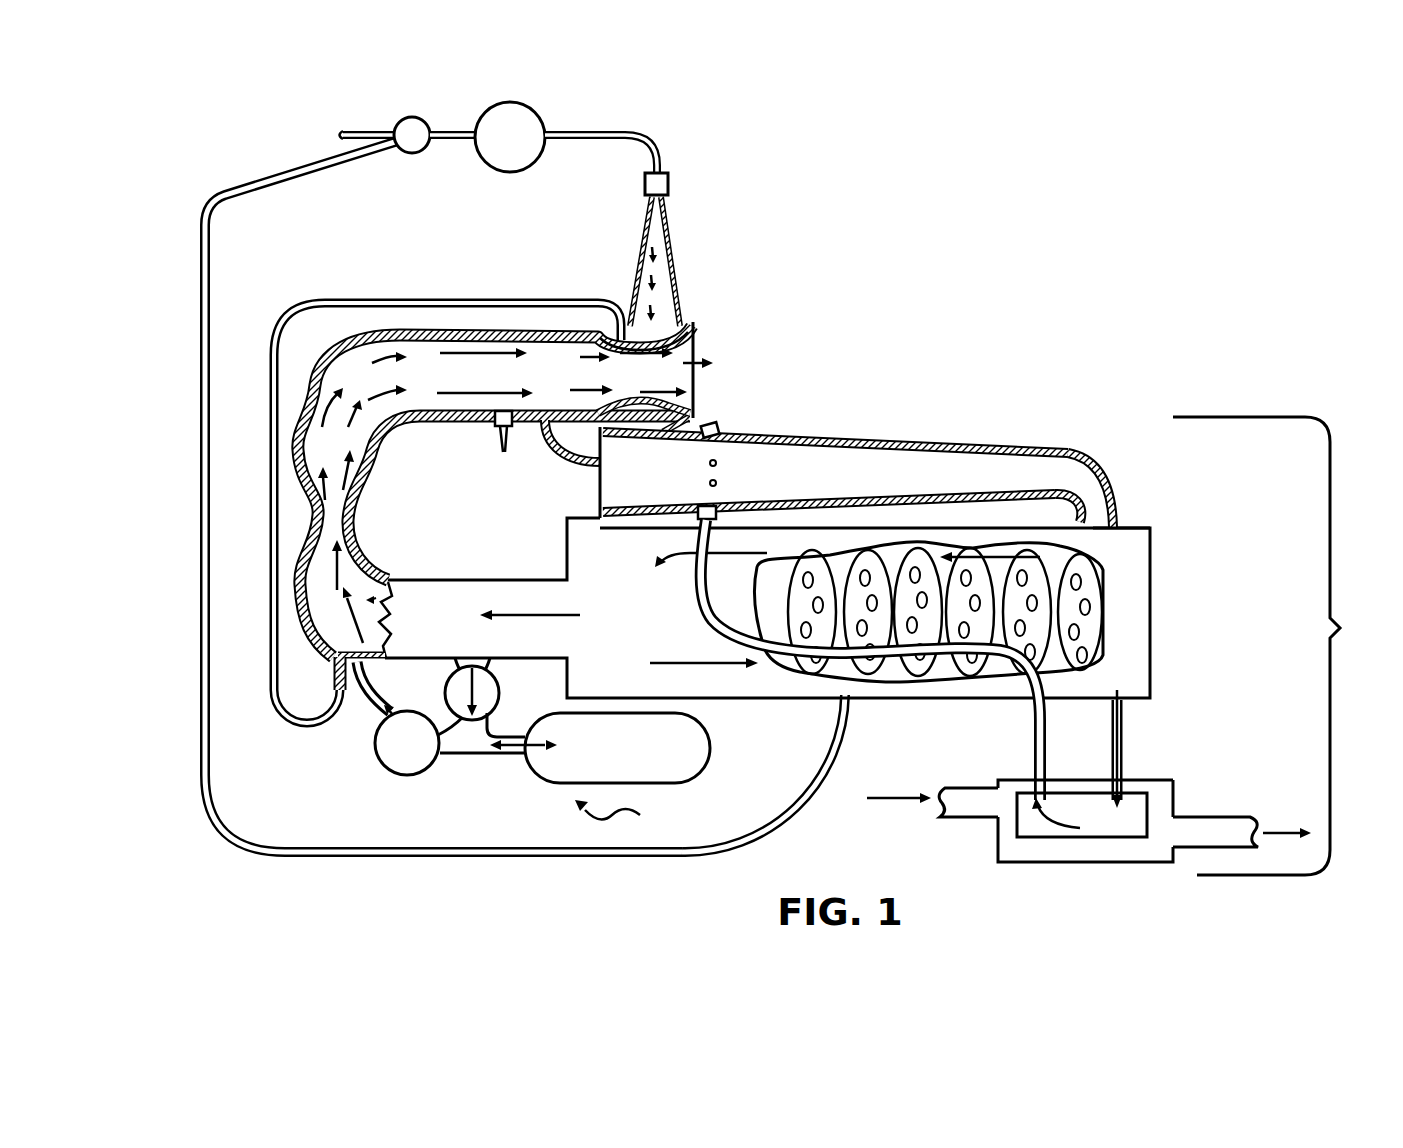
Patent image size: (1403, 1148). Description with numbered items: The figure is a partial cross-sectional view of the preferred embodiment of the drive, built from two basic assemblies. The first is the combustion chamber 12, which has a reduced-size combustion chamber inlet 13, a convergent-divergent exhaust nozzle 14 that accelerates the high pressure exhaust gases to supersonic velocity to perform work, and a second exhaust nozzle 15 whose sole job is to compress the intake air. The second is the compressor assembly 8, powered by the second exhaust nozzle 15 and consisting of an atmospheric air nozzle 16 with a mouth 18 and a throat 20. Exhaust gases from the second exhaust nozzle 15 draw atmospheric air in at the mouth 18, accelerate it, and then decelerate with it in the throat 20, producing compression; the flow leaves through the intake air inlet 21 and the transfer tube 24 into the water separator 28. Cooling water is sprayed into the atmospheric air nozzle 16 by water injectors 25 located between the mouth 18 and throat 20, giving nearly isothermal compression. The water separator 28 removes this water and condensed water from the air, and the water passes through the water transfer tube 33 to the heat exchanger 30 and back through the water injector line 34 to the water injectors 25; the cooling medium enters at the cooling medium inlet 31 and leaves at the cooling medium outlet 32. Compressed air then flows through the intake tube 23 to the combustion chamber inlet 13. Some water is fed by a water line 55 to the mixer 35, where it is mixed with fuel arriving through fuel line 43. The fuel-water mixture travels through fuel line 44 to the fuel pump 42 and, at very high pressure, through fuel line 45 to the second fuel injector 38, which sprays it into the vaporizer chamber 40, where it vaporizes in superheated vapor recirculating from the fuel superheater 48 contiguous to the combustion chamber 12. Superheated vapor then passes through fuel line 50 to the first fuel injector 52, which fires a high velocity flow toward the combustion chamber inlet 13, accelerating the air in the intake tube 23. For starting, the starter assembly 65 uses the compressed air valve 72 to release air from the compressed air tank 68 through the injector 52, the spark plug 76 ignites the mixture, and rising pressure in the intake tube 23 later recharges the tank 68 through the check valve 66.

The compressor assembly 8 is at (1270, 646).
The combustion chamber 12 is at (427, 393).
The combustion chamber inlet 13 is at (354, 517).
The exhaust nozzle 14 is at (694, 346).
The second exhaust nozzle 15 is at (597, 473).
The atmospheric air nozzle 16 is at (850, 446).
The mouth 18 is at (600, 500).
The throat 20 is at (1114, 497).
The intake air inlet 21 is at (1113, 510).
The intake tube 23 is at (470, 580).
The transfer tube 24 is at (1122, 527).
The water injectors 25 is at (722, 430).
The water separator 28 is at (1150, 662).
The heat exchanger 30 is at (1155, 780).
The cooling medium inlet 31 is at (965, 810).
The cooling medium outlet 32 is at (1210, 822).
The water transfer tube 33 is at (1120, 735).
The water injector line 34 is at (1033, 760).
The mixer 35 is at (396, 123).
The second fuel injector 38 is at (664, 183).
The vaporizer chamber 40 is at (636, 327).
The fuel pump 42 is at (478, 160).
The fuel line 43 is at (343, 134).
The fuel line 44 is at (446, 132).
The fuel line 45 is at (597, 133).
The fuel superheater 48 is at (694, 410).
The fuel line 50 is at (398, 301).
The first fuel injector 52 is at (350, 702).
The water line 55 is at (838, 757).
The starter assembly 65 is at (632, 821).
The check valve 66 is at (497, 708).
The compressed air tank 68 is at (703, 760).
The compressed air valve 72 is at (420, 770).
The spark plug 76 is at (512, 455).